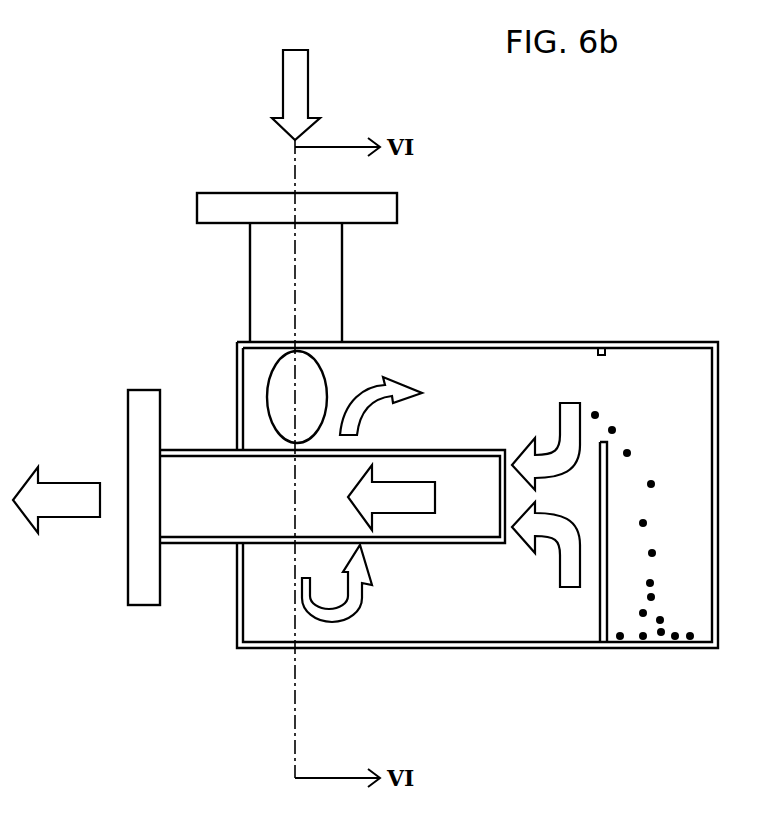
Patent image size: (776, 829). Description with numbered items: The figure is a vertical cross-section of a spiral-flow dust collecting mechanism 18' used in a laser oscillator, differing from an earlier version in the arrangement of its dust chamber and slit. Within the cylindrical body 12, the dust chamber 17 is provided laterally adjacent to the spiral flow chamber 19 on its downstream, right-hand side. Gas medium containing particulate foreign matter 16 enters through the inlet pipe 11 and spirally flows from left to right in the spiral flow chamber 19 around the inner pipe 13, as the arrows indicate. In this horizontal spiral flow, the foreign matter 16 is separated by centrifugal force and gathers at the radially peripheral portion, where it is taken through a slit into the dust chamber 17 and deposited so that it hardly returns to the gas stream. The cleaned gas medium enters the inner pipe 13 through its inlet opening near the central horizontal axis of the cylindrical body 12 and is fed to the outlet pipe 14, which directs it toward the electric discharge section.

The inlet pipe 11 is at (342, 270).
The cylindrical body 12 is at (430, 342).
The inner pipe 13 is at (478, 450).
The outlet pipe 14 is at (213, 450).
The foreign matter 16 is at (651, 553).
The dust chamber 17 is at (670, 365).
The spiral-flow dust collecting mechanism 18' is at (510, 195).
The spiral flow chamber 19 is at (451, 607).